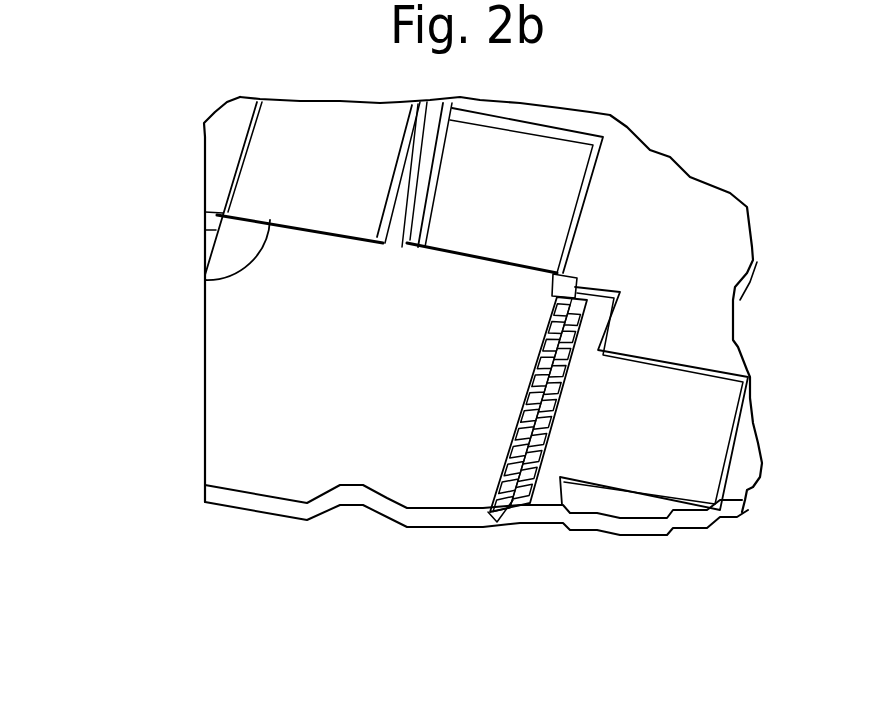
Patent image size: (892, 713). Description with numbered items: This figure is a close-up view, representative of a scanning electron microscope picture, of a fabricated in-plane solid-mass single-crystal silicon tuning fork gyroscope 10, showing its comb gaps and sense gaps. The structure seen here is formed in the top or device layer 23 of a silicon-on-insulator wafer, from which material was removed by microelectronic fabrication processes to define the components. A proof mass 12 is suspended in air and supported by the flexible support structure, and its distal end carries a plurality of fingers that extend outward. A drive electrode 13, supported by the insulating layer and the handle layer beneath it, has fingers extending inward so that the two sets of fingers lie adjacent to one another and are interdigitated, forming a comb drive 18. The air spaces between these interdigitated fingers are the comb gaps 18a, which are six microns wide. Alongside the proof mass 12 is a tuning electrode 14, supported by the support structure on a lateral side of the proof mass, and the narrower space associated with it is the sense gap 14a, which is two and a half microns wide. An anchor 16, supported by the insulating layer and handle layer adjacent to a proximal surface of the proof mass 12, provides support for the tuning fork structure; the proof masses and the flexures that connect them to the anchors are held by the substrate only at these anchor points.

The tuning fork gyroscope 10 is at (108, 116).
The proof mass 12 is at (250, 395).
The drive electrode 13 is at (730, 400).
The tuning electrode 14 is at (293, 115).
The sense gap 14a is at (205, 280).
The anchor 16 is at (725, 246).
The comb drive 18 is at (512, 392).
The comb gap 18a is at (510, 495).
The device layer 23 is at (755, 511).